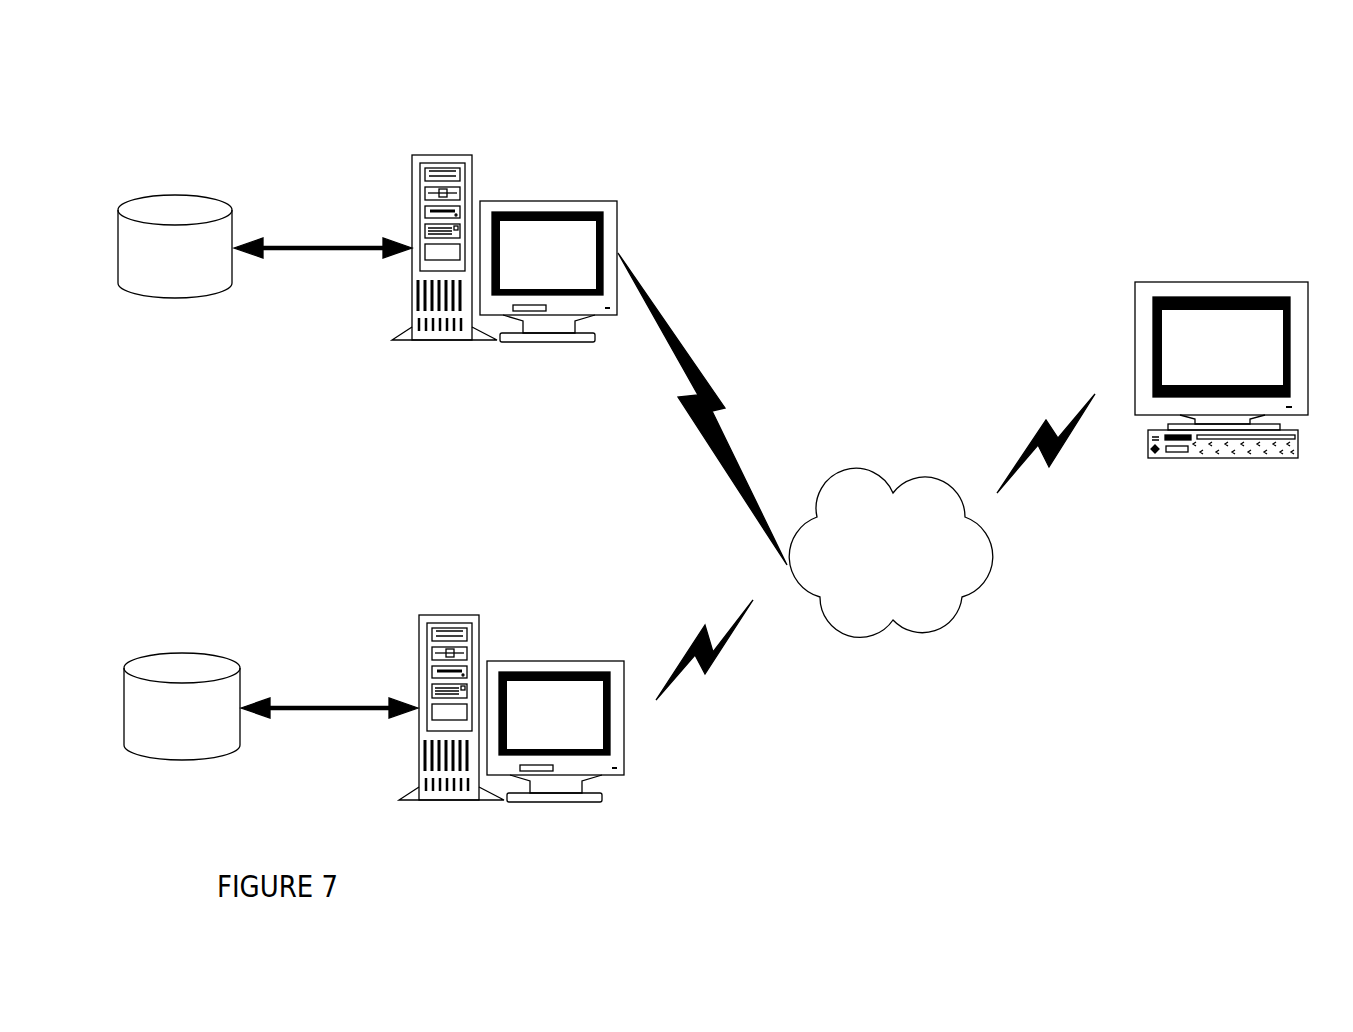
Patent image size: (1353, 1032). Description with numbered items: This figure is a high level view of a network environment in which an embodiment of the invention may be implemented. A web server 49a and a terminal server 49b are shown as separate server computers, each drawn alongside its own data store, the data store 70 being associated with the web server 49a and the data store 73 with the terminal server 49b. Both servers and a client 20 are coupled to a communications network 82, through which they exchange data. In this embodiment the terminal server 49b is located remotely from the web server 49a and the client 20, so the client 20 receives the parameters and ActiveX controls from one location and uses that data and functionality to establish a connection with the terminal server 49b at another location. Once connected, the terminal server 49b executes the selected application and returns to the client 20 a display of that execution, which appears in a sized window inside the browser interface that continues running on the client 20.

The data store 70 is at (175, 303).
The web server 49a is at (440, 105).
The data store 73 is at (185, 653).
The terminal server 49b is at (443, 615).
The communications network 82 is at (860, 475).
The client 20 is at (1206, 247).